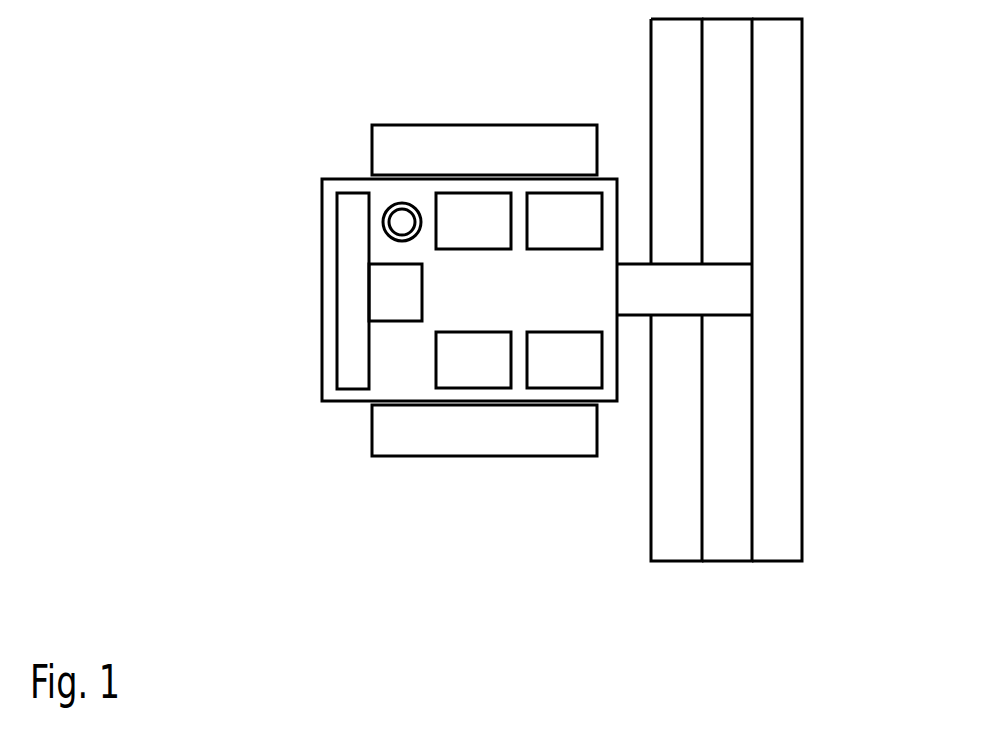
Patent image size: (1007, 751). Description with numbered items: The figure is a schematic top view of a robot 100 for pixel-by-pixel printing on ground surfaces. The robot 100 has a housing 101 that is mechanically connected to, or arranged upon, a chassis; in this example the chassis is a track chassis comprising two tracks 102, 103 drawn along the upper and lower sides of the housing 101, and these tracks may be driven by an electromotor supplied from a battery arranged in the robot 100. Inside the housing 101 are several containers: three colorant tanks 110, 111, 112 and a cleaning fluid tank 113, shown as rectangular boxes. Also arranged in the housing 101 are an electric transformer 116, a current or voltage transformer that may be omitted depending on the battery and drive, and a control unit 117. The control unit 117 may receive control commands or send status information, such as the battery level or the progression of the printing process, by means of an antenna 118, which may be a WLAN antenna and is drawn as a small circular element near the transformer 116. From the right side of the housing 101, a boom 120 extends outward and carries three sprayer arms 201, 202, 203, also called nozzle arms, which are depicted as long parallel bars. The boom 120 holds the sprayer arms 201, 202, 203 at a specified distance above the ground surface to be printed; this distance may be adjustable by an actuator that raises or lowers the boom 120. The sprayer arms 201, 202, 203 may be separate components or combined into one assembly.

The robot 100 is at (273, 74).
The housing 101 is at (321, 288).
The track 102 is at (485, 125).
The track 103 is at (483, 457).
The colorant tank 110 is at (573, 378).
The colorant tank 111 is at (585, 212).
The colorant tank 112 is at (450, 366).
The cleaning fluid tank 113 is at (460, 213).
The electric transformer 116 is at (358, 375).
The control unit 117 is at (381, 278).
The antenna 118 is at (388, 210).
The boom 120 is at (737, 276).
The sprayer arm 201 is at (778, 565).
The sprayer arm 202 is at (725, 565).
The sprayer arm 203 is at (667, 565).